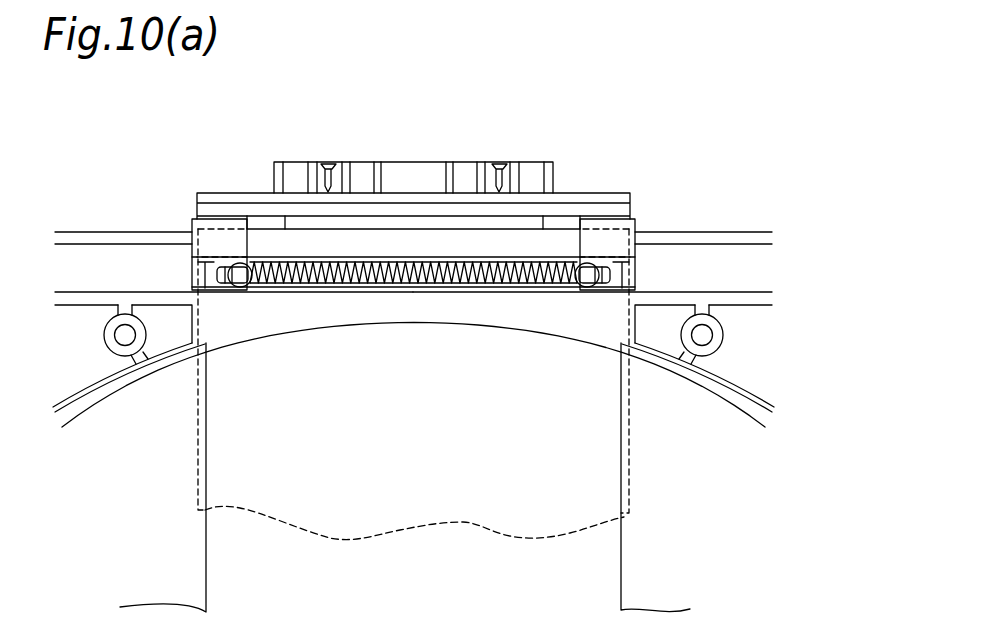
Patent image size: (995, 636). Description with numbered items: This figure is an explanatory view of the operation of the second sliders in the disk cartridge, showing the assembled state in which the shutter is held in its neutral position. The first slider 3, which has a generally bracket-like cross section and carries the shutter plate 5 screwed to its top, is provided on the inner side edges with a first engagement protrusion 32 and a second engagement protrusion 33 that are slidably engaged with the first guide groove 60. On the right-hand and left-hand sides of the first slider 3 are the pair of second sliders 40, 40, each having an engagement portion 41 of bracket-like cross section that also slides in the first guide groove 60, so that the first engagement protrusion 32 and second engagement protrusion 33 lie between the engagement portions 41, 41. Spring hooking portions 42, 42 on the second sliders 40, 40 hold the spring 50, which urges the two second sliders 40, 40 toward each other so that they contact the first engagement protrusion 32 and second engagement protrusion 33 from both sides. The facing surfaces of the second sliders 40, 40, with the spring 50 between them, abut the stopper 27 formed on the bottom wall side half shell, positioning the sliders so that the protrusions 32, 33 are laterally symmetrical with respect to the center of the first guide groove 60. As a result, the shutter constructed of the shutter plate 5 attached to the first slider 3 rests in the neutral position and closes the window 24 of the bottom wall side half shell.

The first slider 3 is at (491, 154).
The stopper 27 is at (268, 240).
The first engagement protrusion 32 is at (252, 221).
The second engagement protrusion 33 is at (555, 220).
The engagement portion 41 is at (206, 232).
The spring hooking portion 42 is at (229, 285).
The spring 50 is at (428, 285).
The first guide groove 60 is at (652, 230).
The second slider 40 is at (213, 297).
The window 24 is at (426, 494).
The shutter plate 5 is at (593, 485).